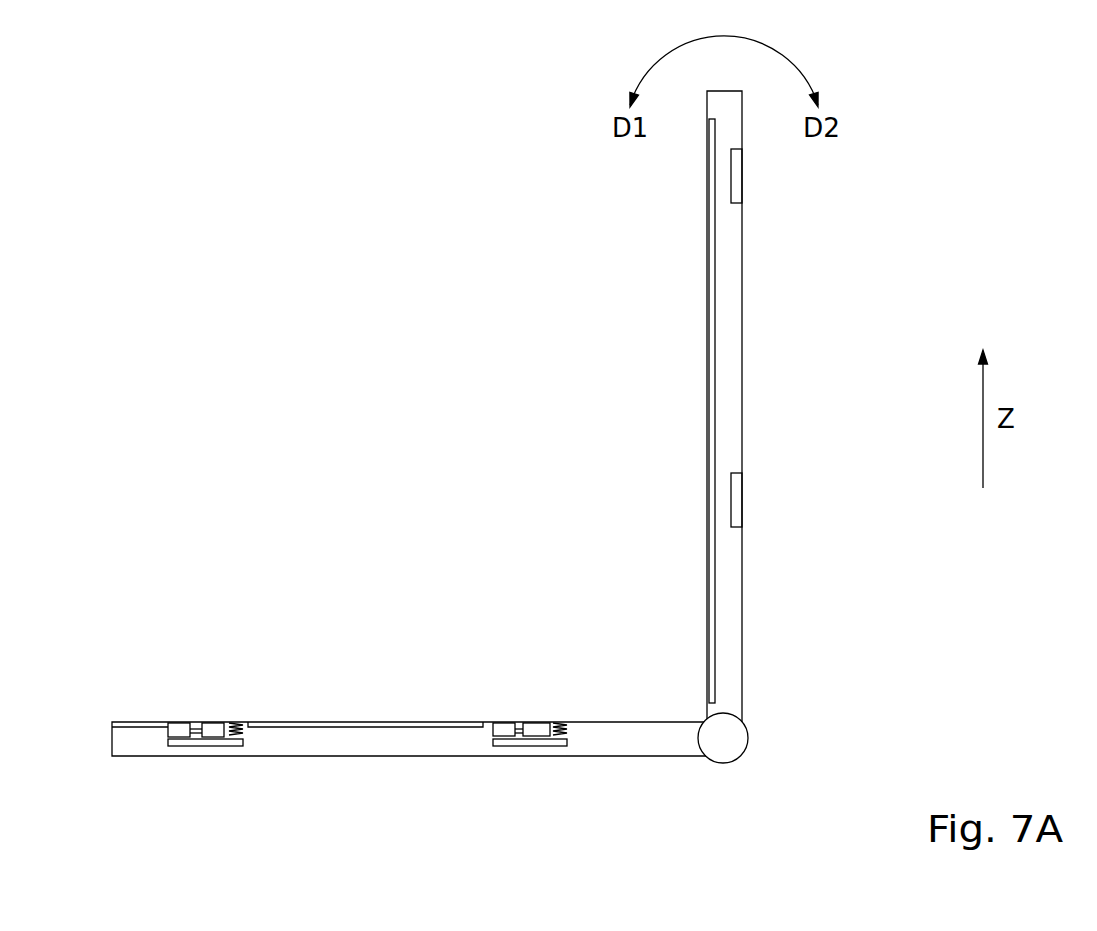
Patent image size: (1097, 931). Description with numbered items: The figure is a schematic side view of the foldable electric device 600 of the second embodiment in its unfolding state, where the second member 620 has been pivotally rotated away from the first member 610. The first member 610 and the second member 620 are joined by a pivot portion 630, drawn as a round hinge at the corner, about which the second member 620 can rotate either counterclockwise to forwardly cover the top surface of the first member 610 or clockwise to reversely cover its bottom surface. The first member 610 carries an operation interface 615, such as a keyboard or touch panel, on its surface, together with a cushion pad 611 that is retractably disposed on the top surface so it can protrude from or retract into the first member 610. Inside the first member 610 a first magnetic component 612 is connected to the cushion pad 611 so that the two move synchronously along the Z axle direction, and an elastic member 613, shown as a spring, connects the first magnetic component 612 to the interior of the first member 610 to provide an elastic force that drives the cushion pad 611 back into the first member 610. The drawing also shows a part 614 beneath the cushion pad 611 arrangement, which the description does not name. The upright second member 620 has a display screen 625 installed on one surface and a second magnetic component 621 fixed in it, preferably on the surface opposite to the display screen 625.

The foldable electric device 600 is at (1049, 57).
The first member 610 is at (409, 720).
The cushion pad 611 is at (180, 725).
The first magnetic component 612 is at (519, 760).
The elastic member 613 is at (568, 727).
The sliding plate 614 is at (216, 748).
The operation interface 615 is at (418, 722).
The second member 620 is at (751, 406).
The second magnetic component 621 is at (737, 501).
The display screen 625 is at (711, 426).
The pivot portion 630 is at (733, 740).